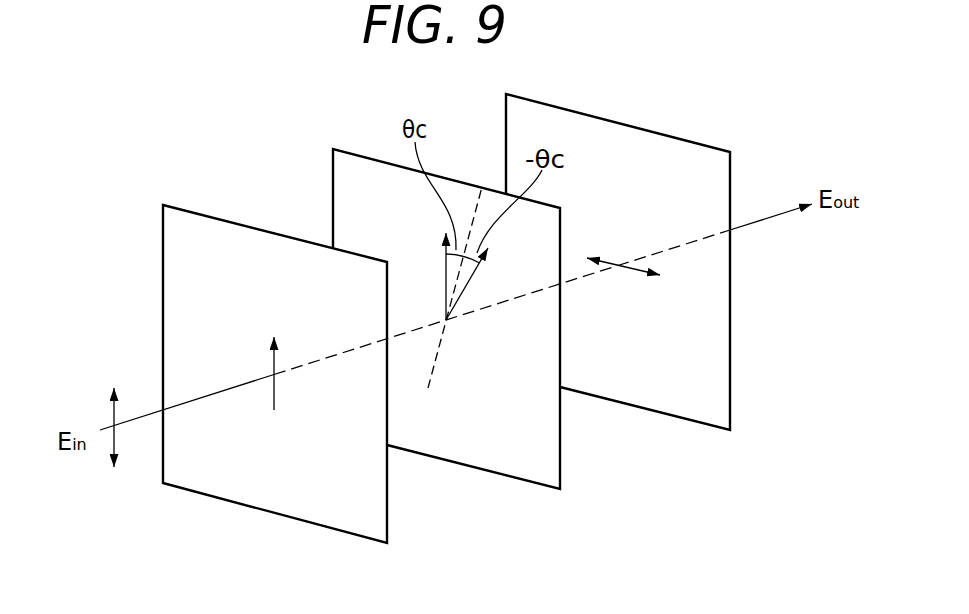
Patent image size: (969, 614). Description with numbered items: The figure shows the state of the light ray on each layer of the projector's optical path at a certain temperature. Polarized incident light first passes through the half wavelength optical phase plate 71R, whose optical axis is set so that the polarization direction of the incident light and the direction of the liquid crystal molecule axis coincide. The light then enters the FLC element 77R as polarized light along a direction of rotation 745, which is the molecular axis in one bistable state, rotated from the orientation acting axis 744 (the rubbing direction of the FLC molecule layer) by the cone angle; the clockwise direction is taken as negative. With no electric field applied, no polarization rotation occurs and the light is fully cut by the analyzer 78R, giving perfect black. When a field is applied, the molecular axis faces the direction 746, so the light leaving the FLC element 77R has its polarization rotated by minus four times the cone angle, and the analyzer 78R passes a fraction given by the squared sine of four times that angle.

The half wavelength optical phase plate 71R is at (330, 518).
The FLC element 77R is at (525, 472).
The analyzer 78R is at (687, 410).
The orientation acting axis 744 is at (471, 207).
The direction of rotation 745 is at (445, 273).
The direction faced by liquid crystal molecule axis 746 is at (467, 279).